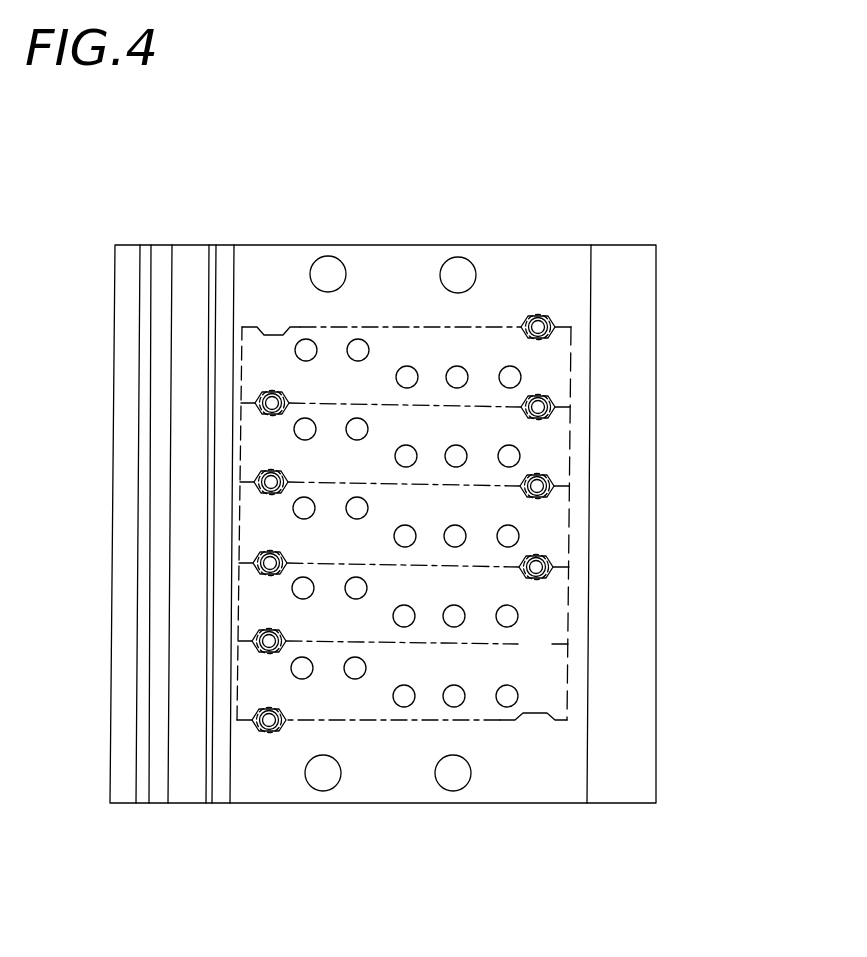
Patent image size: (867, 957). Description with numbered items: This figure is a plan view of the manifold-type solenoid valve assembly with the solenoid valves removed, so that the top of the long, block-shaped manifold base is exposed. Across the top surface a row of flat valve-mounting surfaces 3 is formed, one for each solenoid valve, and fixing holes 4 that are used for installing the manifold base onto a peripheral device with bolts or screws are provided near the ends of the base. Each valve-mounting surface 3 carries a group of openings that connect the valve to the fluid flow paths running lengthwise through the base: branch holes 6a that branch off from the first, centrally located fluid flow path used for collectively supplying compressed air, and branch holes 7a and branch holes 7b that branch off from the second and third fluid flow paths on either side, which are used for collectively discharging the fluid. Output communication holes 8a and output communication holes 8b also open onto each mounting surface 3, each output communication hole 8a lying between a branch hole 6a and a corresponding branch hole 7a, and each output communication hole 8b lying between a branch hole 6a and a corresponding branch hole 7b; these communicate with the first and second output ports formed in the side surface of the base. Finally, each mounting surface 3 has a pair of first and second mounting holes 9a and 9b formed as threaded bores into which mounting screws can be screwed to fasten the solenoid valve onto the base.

The valve-mounting surface 3 is at (547, 366).
The fixing hole 4 is at (455, 273).
The branch hole 6a is at (404, 617).
The branch hole 7a is at (305, 585).
The branch hole 7b is at (508, 616).
The output communication hole 8a is at (454, 617).
The output communication hole 8b is at (355, 585).
The first mounting hole 9a is at (537, 487).
The second mounting hole 9b is at (269, 641).